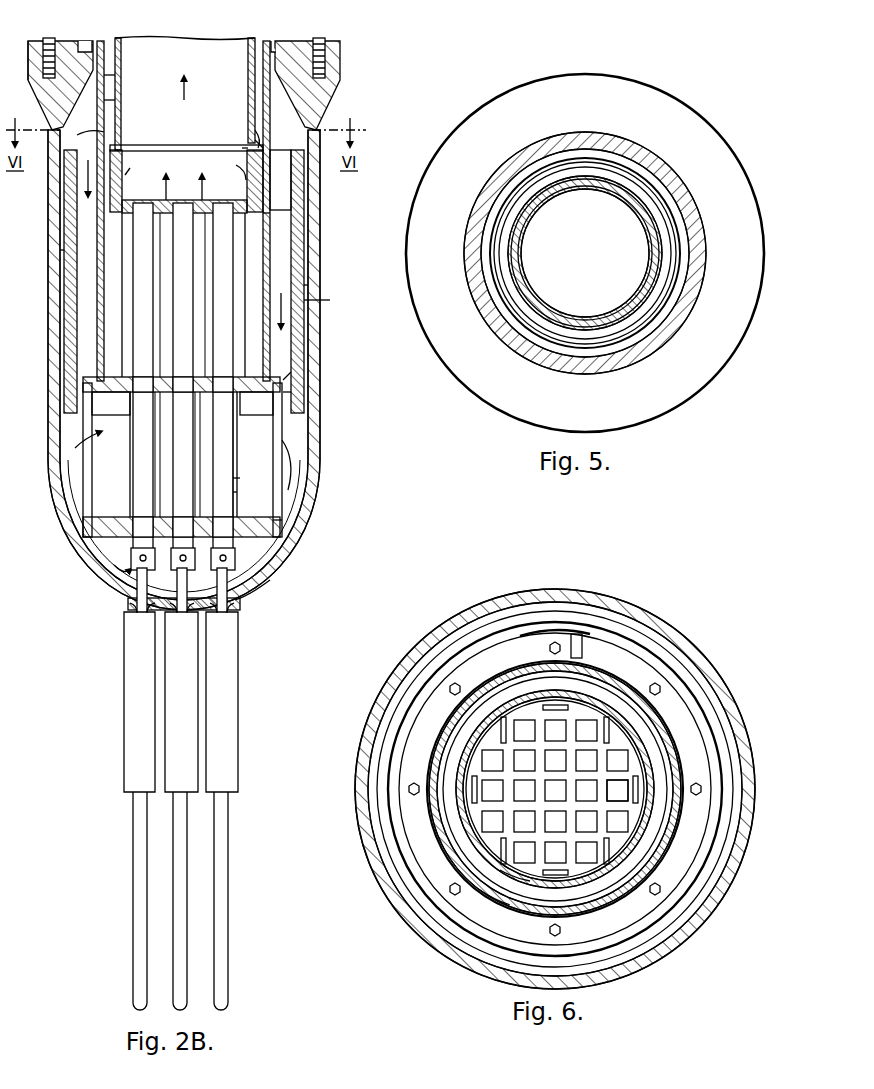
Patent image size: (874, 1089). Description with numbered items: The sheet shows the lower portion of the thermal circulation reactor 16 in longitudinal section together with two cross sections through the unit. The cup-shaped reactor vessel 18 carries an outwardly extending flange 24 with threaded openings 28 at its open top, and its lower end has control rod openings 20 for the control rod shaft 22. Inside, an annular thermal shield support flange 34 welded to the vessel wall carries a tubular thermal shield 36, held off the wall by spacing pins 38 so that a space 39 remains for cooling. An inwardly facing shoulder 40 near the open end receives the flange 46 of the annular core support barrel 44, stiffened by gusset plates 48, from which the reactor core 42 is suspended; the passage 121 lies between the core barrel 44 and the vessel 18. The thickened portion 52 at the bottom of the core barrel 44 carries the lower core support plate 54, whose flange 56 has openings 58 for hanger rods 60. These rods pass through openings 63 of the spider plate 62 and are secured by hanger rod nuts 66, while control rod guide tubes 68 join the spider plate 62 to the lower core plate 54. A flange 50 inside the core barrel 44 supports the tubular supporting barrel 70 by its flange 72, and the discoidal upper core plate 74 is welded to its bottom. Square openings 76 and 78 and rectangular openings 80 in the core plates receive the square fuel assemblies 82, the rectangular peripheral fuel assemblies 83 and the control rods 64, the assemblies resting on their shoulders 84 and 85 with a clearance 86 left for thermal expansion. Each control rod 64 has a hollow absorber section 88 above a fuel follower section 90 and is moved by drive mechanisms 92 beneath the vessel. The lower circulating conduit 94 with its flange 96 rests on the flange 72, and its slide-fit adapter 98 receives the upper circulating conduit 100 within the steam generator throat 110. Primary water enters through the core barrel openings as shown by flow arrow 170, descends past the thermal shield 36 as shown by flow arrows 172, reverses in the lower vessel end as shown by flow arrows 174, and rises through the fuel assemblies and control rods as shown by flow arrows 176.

In FIG. 2B, the thermal circulation reactor 16 is at (322, 262).
In FIG. 6, the thermal circulation reactor 16 is at (533, 590).
In FIG. 2B, the reactor vessel 18 is at (316, 282).
In FIG. 2B, the control rod openings 20 is at (240, 604).
In FIG. 2B, the control rod shaft 22 is at (250, 580).
In FIG. 2B, the flange 24 is at (341, 58).
In FIG. 2B, the threaded openings 28 is at (326, 46).
In FIG. 2B, the thermal shield support flange 34 is at (322, 450).
In FIG. 2B, the thermal shield 36 is at (305, 385).
In FIG. 6, the thermal shield 36 is at (597, 600).
In FIG. 2B, the spacing pins 38 is at (306, 180).
In FIG. 6, the spacing pins 38 is at (430, 636).
In FIG. 2B, the space 39 is at (308, 305).
In FIG. 6, the space 39 is at (470, 608).
In FIG. 2B, the shoulder 40 is at (86, 40).
In FIG. 2B, the reactor core 42 is at (300, 330).
In FIG. 6, the reactor core 42 is at (545, 695).
In FIG. 2B, the core support barrel 44 is at (271, 125).
In FIG. 6, the core support barrel 44 is at (582, 640).
In FIG. 2B, the flange 46 is at (276, 42).
In FIG. 2B, the gusset plates 48 is at (88, 42).
In FIG. 2B, the flange 50 is at (246, 152).
In FIG. 2B, the thickened portion 52 is at (300, 368).
In FIG. 6, the thickened portion 52 is at (570, 636).
In FIG. 2B, the lower core support plate 54 is at (252, 400).
In FIG. 2B, the flange 56 is at (264, 465).
In FIG. 6, the flange 56 is at (528, 636).
In FIG. 2B, the openings 58 is at (305, 396).
In FIG. 2B, the hanger rods 60 is at (282, 478).
In FIG. 2B, the spider plate 62 is at (236, 540).
In FIG. 2B, the openings 63 is at (284, 528).
In FIG. 2B, the control rods 64 is at (133, 476).
In FIG. 2B, the hanger rod nuts 66 is at (300, 380).
In FIG. 6, the hanger rod nuts 66 is at (558, 938).
In FIG. 2B, the control rod guide tubes 68 is at (240, 480).
In FIG. 2B, the supporting barrel 70 is at (178, 155).
In FIG. 2B, the flange 72 is at (268, 152).
In FIG. 2B, the upper core plate 74 is at (268, 198).
In FIG. 6, the openings 76 is at (480, 762).
In FIG. 6, the openings 78 is at (630, 762).
In FIG. 6, the openings 80 is at (510, 715).
In FIG. 2B, the fuel assemblies 82 is at (186, 225).
In FIG. 2B, the fuel assemblies 83 is at (122, 252).
In FIG. 2B, the shoulders 84 is at (152, 200).
In FIG. 2B, the shoulders 85 is at (270, 240).
In FIG. 2B, the clearance 86 is at (133, 162).
In FIG. 2B, the absorber section 88 is at (231, 168).
In FIG. 2B, the fuel follower section 90 is at (237, 494).
In FIG. 2B, the control rod drive mechanisms 92 is at (240, 635).
In FIG. 2B, the lower circulating conduit 94 is at (255, 80).
In FIG. 6, the lower circulating conduit 94 is at (528, 885).
In FIG. 2B, the flange 96 is at (250, 130).
In FIG. 6, the flange 96 is at (503, 908).
In FIG. 5, the slide-fit adapter 98 is at (652, 155).
In FIG. 5, the upper circulating conduit 100 is at (532, 205).
In FIG. 5, the steam generator throat 110 is at (618, 134).
In FIG. 2B, the passage 121 is at (108, 100).
In FIG. 2B, the flow arrow 170 is at (112, 72).
In FIG. 2B, the flow arrows 172 is at (100, 137).
In FIG. 2B, the flow arrows 174 is at (102, 502).
In FIG. 2B, the flow arrows 176 is at (174, 180).